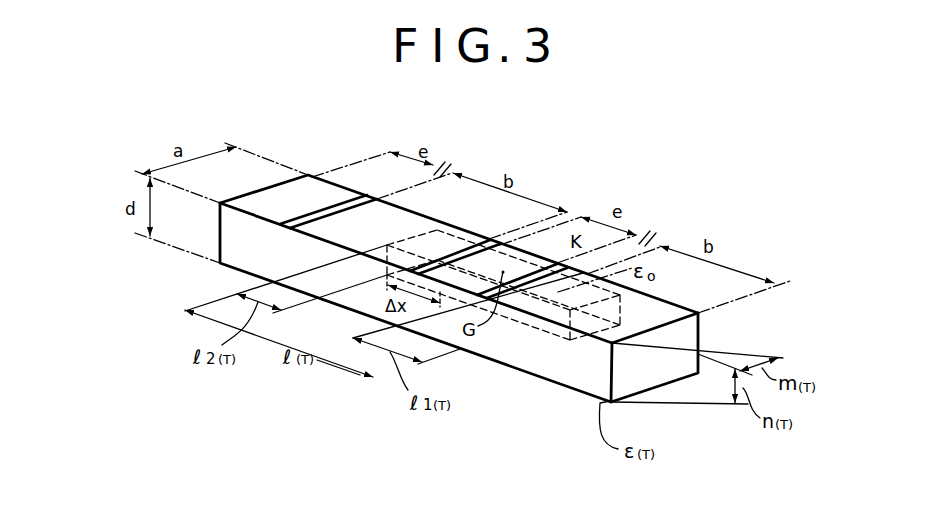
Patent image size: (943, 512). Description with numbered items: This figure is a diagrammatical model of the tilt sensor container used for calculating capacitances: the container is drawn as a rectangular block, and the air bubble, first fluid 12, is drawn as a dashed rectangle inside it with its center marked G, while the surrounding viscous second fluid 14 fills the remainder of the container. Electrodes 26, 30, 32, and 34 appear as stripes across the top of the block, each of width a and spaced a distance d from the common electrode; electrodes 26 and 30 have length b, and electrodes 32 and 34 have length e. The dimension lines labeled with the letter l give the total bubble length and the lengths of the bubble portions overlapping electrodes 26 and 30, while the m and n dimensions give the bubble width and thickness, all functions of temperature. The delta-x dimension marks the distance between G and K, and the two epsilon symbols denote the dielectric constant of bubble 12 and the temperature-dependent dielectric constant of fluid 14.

The first fluid 12 is at (553, 333).
The second fluid 14 is at (563, 373).
The electrode 26 is at (664, 305).
The electrode 30 is at (407, 222).
The electrode 32 is at (508, 246).
The electrode 34 is at (320, 192).